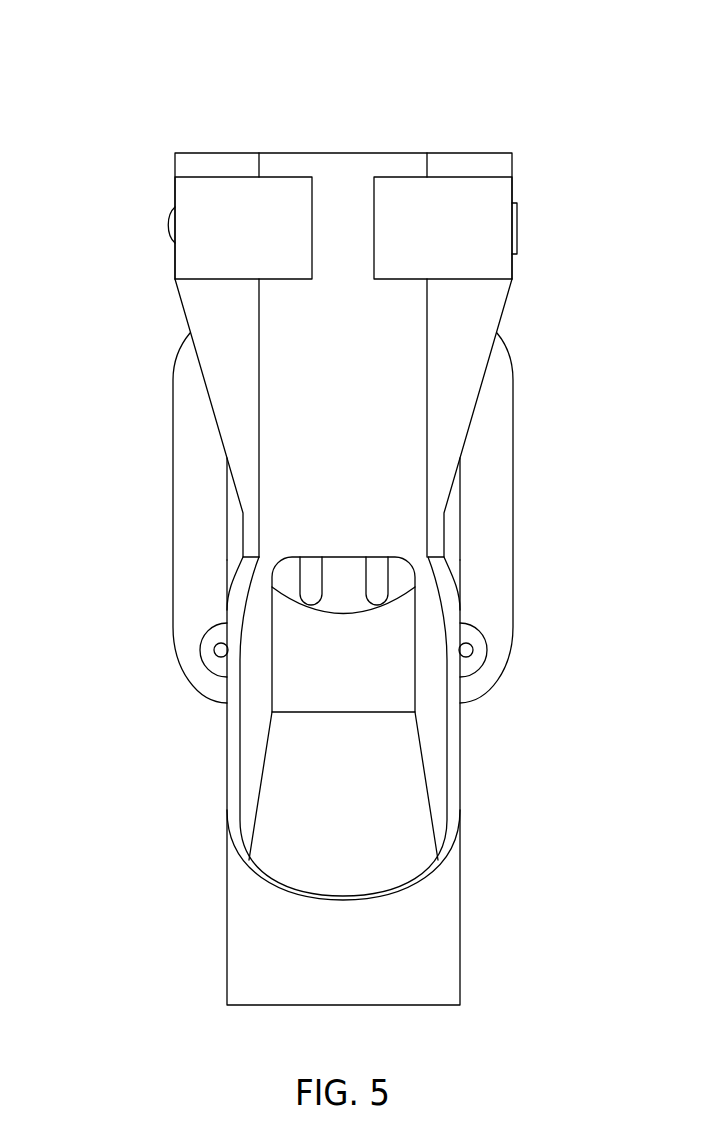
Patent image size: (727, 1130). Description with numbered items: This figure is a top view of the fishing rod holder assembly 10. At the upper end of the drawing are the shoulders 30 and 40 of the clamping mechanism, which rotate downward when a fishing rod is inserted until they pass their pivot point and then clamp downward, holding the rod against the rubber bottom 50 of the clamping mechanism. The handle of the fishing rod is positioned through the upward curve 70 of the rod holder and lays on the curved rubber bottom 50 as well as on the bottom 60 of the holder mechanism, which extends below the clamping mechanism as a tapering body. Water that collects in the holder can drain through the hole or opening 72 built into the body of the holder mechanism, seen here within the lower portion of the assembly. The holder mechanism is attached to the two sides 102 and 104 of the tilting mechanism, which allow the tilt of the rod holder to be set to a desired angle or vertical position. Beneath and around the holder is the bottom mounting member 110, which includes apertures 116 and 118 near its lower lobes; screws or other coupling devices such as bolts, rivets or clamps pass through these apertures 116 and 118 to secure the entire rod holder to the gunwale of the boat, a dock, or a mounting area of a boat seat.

The connector assembly 10 is at (116, 135).
The shoulder 30 is at (168, 224).
The shoulder 40 is at (517, 220).
The rubber bottom 50 is at (340, 172).
The bottom of the holder mechanism 60 is at (417, 401).
The upward curve 70 is at (460, 945).
The hole or opening 72 is at (412, 793).
The mounting side 102 is at (307, 582).
The mounting side 104 is at (388, 582).
The bottom mounting member 110 is at (173, 512).
The aperture 116 is at (183, 653).
The aperture 118 is at (500, 653).